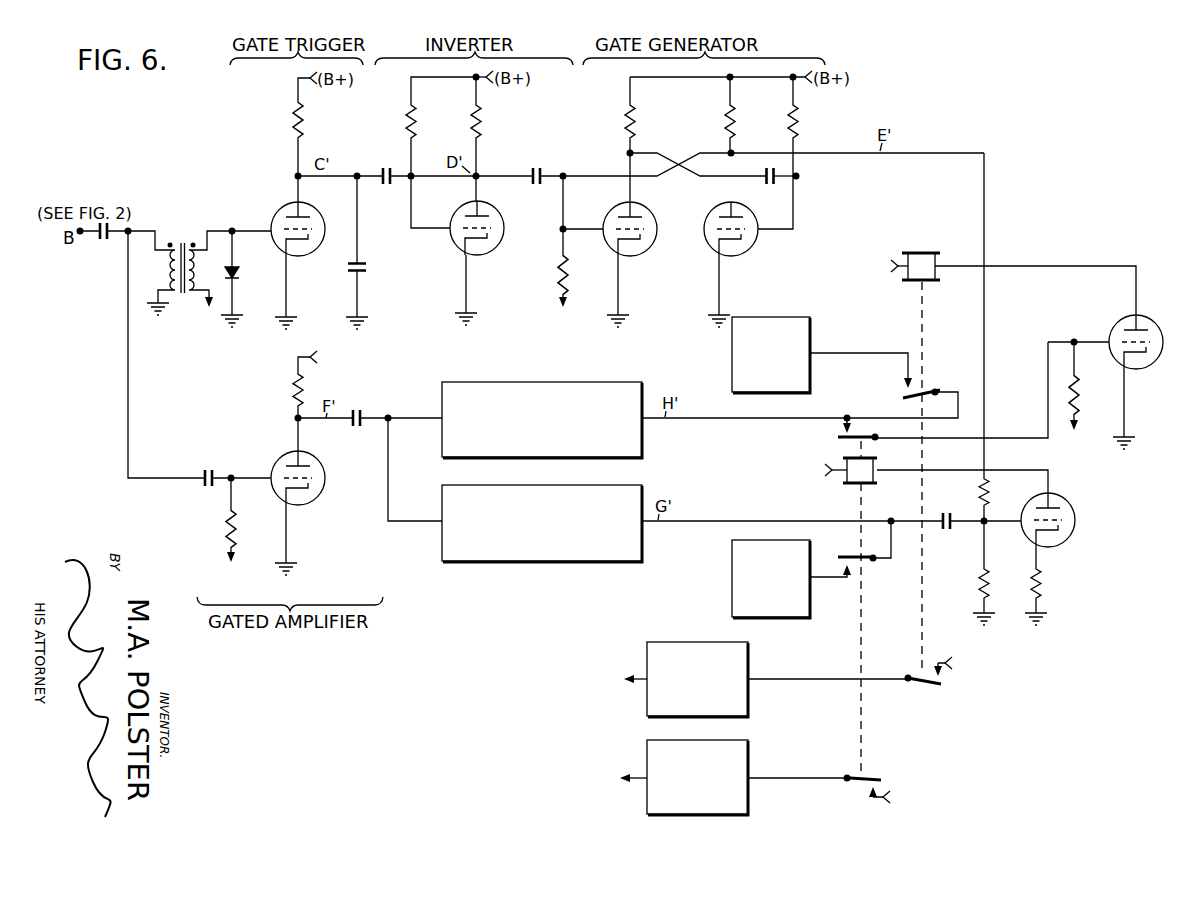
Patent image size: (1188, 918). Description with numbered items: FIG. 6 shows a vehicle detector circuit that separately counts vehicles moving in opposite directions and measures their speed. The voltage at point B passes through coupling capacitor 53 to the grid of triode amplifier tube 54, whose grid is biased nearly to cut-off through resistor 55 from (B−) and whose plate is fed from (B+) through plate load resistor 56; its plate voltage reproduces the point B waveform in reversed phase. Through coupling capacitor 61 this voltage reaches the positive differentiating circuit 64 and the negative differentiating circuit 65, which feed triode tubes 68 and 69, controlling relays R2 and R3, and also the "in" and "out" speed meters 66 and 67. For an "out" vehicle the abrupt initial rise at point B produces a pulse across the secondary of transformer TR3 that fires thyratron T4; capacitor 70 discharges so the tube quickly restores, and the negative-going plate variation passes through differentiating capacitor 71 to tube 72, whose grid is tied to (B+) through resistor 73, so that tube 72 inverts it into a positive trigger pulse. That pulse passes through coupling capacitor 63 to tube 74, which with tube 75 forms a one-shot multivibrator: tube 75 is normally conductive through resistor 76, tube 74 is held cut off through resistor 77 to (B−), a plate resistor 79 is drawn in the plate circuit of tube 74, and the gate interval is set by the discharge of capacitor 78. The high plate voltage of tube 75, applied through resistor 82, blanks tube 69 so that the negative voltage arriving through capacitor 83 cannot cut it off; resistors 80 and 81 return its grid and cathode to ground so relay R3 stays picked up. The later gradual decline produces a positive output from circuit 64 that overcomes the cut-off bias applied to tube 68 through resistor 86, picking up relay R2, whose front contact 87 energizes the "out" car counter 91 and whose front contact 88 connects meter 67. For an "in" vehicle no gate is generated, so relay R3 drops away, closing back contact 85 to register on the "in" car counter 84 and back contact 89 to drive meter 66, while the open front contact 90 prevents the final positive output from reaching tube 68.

The coupling capacitor 53 is at (207, 474).
The triode amplifier tube 54 is at (277, 456).
The resistor 55 is at (225, 512).
The plate load resistor 56 is at (292, 392).
The coupling capacitor 61 is at (361, 412).
The coupling capacitor 63 is at (537, 167).
The positive differentiating circuit 64 is at (600, 382).
The negative differentiating circuit 65 is at (592, 485).
The "in" speed meter 66 is at (732, 554).
The "out" speed meter 67 is at (772, 316).
The triode amplifier 68 is at (1117, 319).
The triode tube 69 is at (1072, 504).
The capacitor 70 is at (363, 264).
The differentiating capacitor 71 is at (384, 170).
The triode tube 72 is at (462, 203).
The resistor 73 is at (416, 107).
The tube 74 is at (612, 211).
The tube 75 is at (713, 211).
The plate load resistor 76 is at (800, 108).
The resistor 77 is at (558, 272).
The capacitor 78 is at (773, 183).
The plate resistor 79 is at (637, 108).
The resistor 80 is at (994, 596).
The resistor 81 is at (1045, 596).
The resistor 82 is at (990, 493).
The capacitor 83 is at (950, 510).
The "in" car counter 84 is at (706, 741).
The back contact 85 is at (857, 773).
The resistor 86 is at (1080, 396).
The front contact 87 is at (863, 664).
The front contact 88 is at (922, 394).
The back contact 89 is at (868, 561).
The front contact 90 is at (868, 437).
The "out" car counter 91 is at (694, 641).
The thyratron T4 is at (280, 209).
The transformer TR3 is at (180, 278).
The vehicle detection relay R2 is at (994, 453).
The vehicle detection relay R3 is at (873, 465).